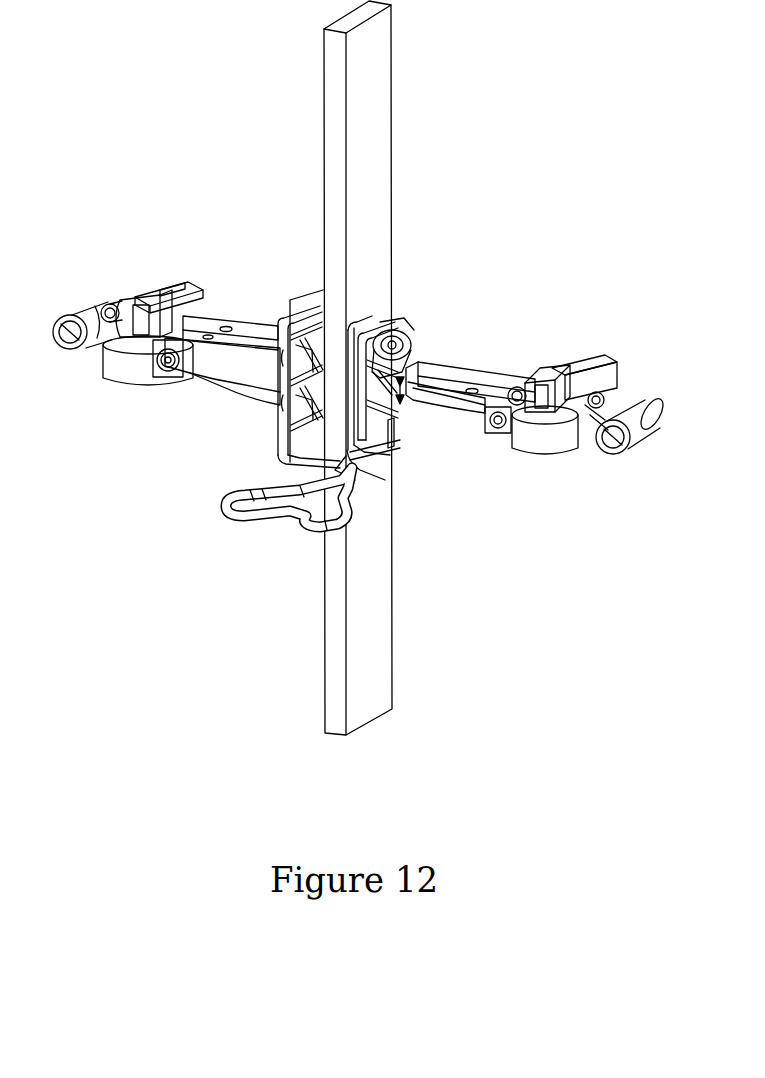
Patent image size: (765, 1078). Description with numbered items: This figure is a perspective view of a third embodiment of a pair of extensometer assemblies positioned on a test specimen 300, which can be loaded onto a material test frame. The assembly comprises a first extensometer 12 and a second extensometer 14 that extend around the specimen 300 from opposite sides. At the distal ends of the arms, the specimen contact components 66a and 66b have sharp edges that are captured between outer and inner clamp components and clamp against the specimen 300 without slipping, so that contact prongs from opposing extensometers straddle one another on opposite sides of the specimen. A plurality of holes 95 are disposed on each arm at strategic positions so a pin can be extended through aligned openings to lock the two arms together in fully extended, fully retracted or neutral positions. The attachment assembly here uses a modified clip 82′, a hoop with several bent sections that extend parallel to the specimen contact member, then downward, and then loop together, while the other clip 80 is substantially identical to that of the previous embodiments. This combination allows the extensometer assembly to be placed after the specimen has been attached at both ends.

The test specimen 300 is at (393, 191).
The second extensometer 14 is at (254, 310).
The first extensometer 12 is at (488, 368).
The holes 95 is at (423, 352).
The specimen contact component 66a is at (348, 348).
The specimen contact component 66b is at (354, 434).
The clip 82′ is at (275, 431).
The clip 80 is at (250, 523).